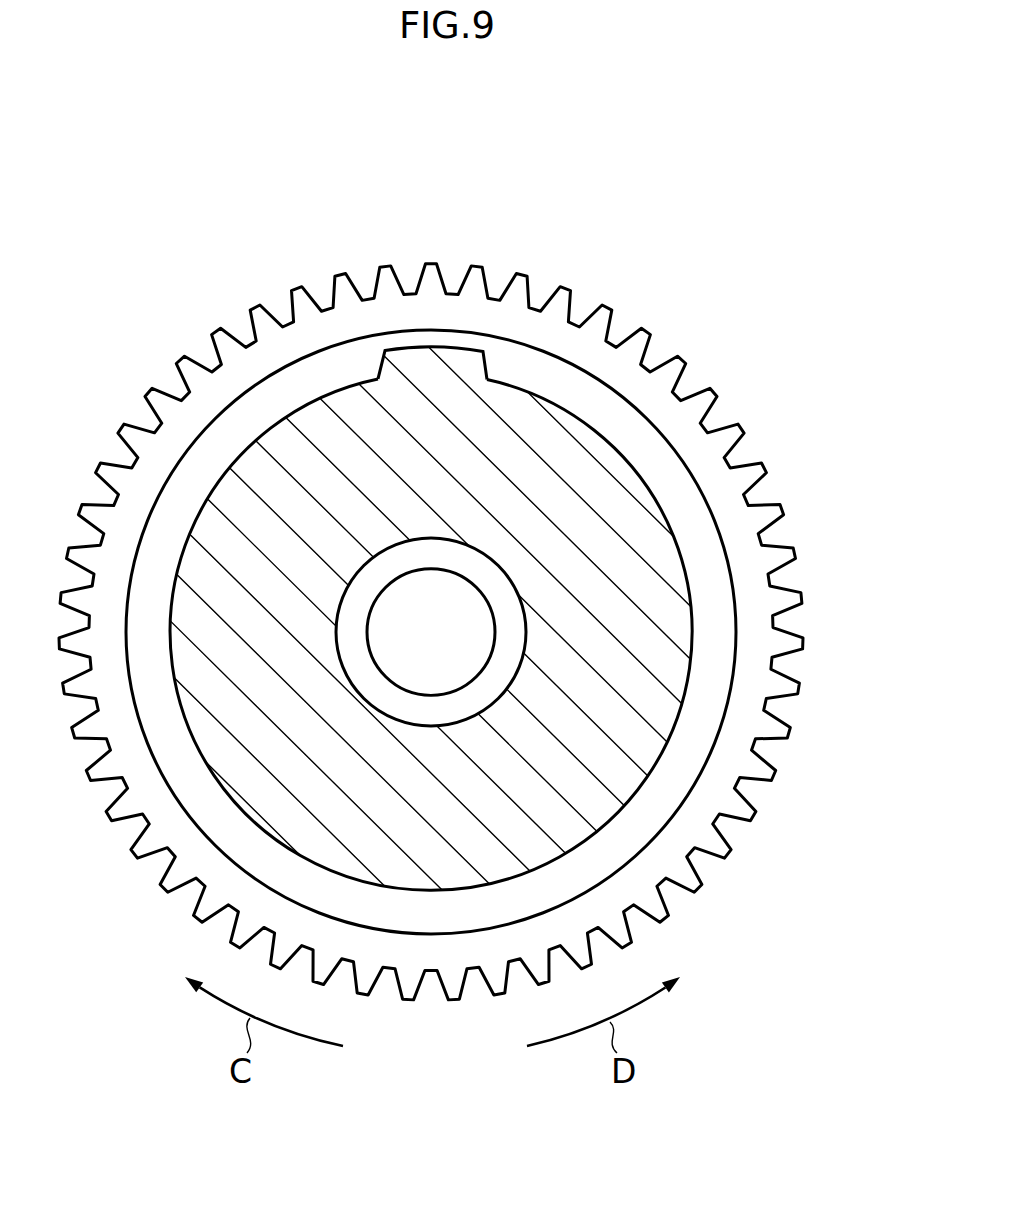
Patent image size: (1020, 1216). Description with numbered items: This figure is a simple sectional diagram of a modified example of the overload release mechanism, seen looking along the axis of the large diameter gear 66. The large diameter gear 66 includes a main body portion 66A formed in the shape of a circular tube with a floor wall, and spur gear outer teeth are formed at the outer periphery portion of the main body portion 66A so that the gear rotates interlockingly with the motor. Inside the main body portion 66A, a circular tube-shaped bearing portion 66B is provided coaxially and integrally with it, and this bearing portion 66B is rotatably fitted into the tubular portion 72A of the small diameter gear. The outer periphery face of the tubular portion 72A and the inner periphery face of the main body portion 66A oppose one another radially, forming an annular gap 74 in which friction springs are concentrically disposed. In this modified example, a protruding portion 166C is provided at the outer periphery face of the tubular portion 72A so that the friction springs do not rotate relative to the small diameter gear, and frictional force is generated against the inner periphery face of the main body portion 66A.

The large diameter gear 66 is at (687, 356).
The main body portion 66A is at (431, 632).
The bearing portion 66B is at (431, 632).
The tubular portion 72A is at (431, 608).
The annular gap 74 is at (431, 632).
The protruding portion 166C is at (432, 363).